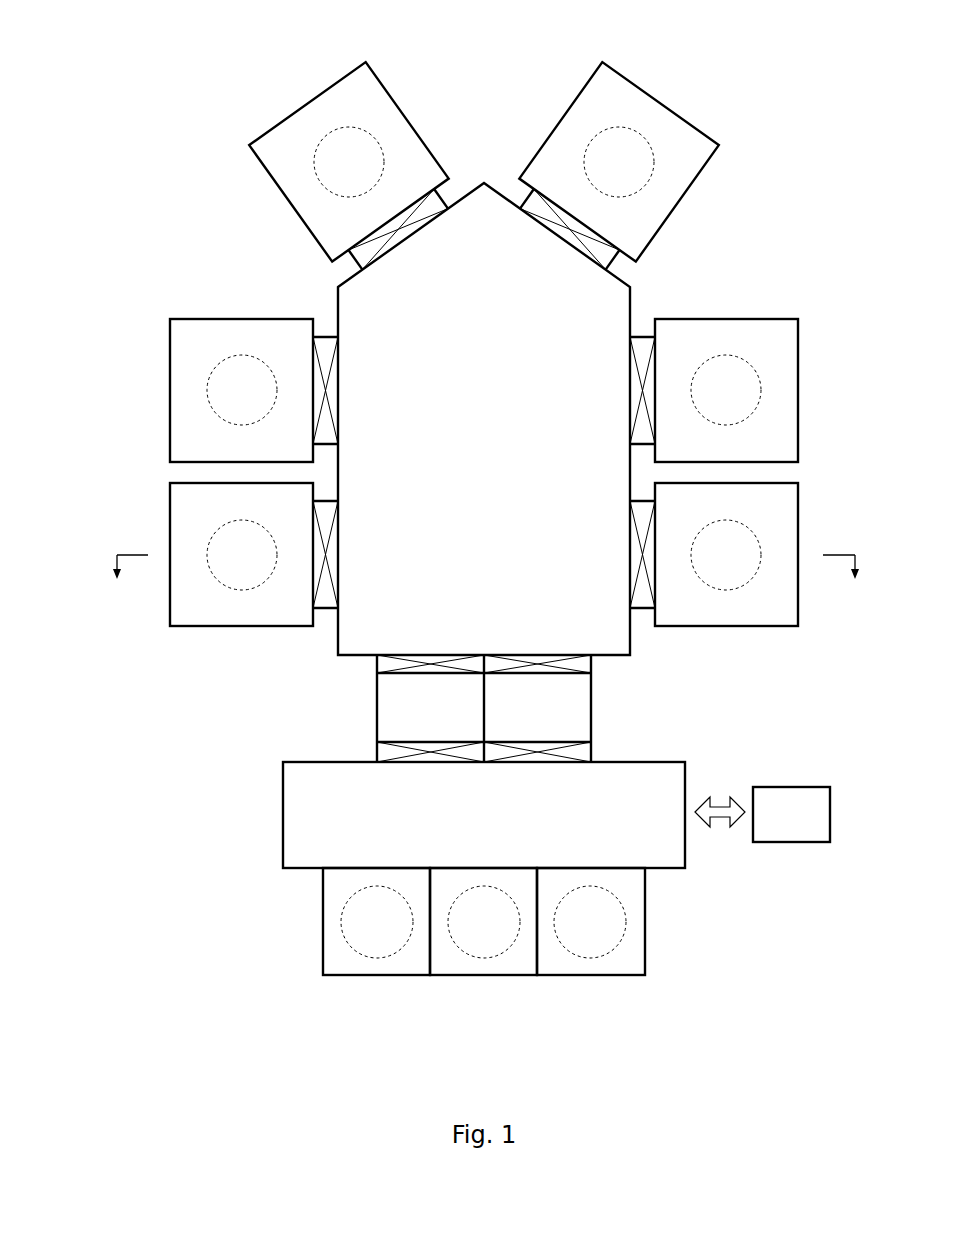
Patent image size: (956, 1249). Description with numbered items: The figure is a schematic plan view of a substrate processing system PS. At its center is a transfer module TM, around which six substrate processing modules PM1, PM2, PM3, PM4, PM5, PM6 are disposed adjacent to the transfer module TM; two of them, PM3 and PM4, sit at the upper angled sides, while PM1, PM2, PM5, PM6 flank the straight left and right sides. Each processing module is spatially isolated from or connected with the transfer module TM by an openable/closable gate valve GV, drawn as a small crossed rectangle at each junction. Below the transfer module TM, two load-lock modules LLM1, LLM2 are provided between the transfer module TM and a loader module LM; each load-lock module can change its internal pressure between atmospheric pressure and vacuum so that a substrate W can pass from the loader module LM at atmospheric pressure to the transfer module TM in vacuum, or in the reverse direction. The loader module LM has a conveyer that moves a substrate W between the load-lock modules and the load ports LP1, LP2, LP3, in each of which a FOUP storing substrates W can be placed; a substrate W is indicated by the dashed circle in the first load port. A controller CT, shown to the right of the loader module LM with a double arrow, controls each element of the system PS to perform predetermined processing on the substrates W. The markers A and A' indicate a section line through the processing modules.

The substrate processing system PS is at (822, 36).
The transfer module TM is at (483, 180).
The substrate processing module PM1 is at (248, 630).
The substrate processing module PM2 is at (240, 318).
The substrate processing module PM3 is at (322, 93).
The substrate processing module PM4 is at (658, 98).
The substrate processing module PM5 is at (727, 318).
The substrate processing module PM6 is at (718, 630).
The gate valve GV is at (400, 243).
The load-lock module LLM1 is at (377, 714).
The load-lock module LLM2 is at (591, 708).
The loader module LM is at (283, 828).
The controller CT is at (792, 787).
The load port LP1 is at (334, 943).
The load port LP2 is at (487, 975).
The load port LP3 is at (645, 930).
The substrate W is at (388, 958).
The section line A is at (129, 582).
The section line A' is at (843, 582).